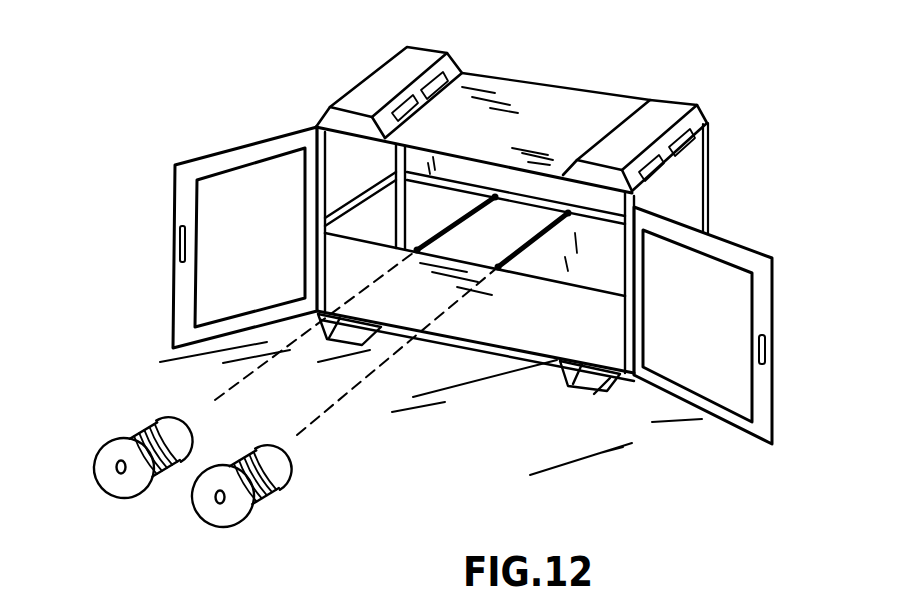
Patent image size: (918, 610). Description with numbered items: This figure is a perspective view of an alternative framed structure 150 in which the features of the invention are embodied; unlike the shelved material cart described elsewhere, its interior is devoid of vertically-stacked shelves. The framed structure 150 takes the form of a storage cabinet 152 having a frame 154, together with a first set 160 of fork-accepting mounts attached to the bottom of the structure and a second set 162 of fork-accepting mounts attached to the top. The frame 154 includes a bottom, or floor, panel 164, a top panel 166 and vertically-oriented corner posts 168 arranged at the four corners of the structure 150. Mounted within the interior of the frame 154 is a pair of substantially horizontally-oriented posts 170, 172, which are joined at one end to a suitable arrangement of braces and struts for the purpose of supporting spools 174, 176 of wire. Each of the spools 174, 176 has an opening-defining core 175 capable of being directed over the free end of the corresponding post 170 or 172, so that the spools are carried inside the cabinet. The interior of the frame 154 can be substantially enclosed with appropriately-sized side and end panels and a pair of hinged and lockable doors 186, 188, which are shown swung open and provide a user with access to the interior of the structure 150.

The framed structure 150 is at (675, 58).
The storage cabinet 152 is at (580, 98).
The frame 154 is at (334, 70).
The first set of fork-accepting mounts 160 is at (626, 472).
The second set of fork-accepting mounts 162 is at (736, 135).
The bottom panel 164 is at (486, 352).
The top panel 166 is at (528, 98).
The corner posts 168 is at (395, 211).
The horizontally-oriented post 170 is at (456, 230).
The horizontally-oriented post 172 is at (506, 268).
The spool of wire 174 is at (136, 499).
The opening-defining core 175 is at (117, 469).
The spool of wire 176 is at (228, 528).
The hinged door 186 is at (221, 150).
The hinged door 188 is at (741, 243).